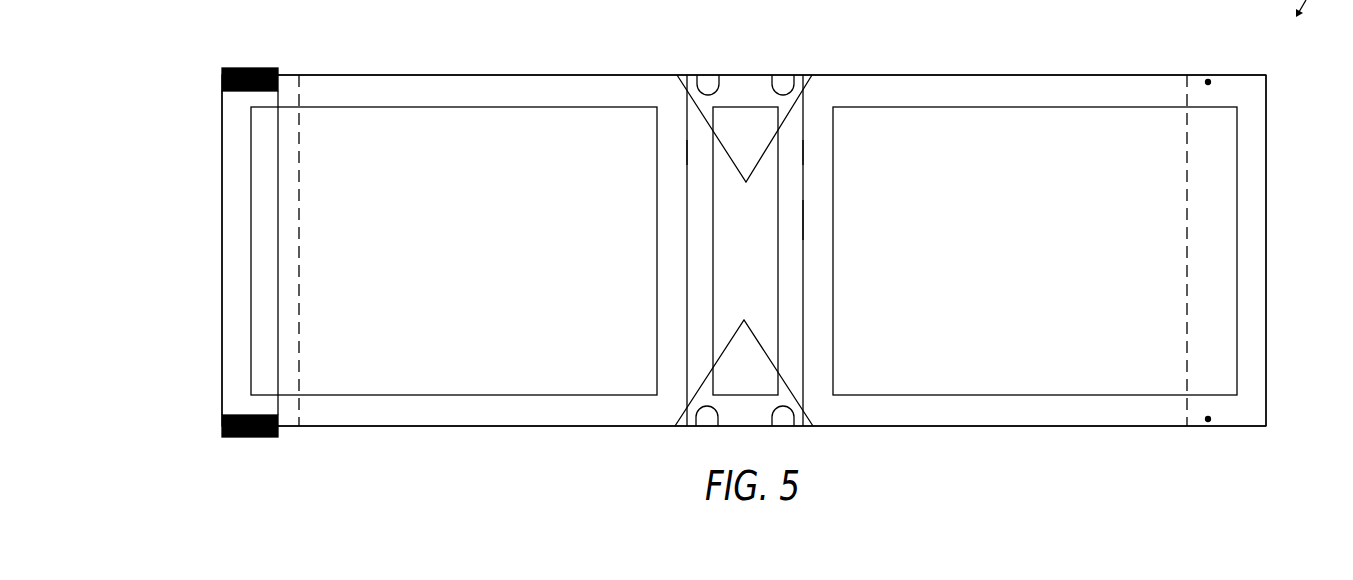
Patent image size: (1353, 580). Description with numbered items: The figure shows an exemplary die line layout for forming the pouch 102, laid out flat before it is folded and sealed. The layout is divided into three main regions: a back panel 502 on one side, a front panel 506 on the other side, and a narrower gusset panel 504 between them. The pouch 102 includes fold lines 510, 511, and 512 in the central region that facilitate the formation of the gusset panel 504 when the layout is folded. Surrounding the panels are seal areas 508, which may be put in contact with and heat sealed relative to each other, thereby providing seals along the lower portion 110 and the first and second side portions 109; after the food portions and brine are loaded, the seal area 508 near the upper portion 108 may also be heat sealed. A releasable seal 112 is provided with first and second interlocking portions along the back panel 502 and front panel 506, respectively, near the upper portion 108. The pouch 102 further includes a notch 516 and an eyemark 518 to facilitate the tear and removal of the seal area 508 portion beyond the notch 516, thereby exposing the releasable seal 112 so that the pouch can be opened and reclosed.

The pouch 102 is at (1288, 102).
The upper portion 108 is at (185, 263).
The first and second side portions 109 is at (388, 55).
The lower portion 110 is at (812, 219).
The releasable seal 112 is at (300, 405).
The back panel 502 is at (568, 333).
The gusset panel 504 is at (757, 293).
The front panel 506 is at (1033, 358).
The seal areas 508 is at (670, 385).
The fold line 510 is at (684, 152).
The fold line 511 is at (708, 82).
The fold line 512 is at (697, 106).
The notch 516 is at (1210, 82).
The eyemark 518 is at (241, 67).